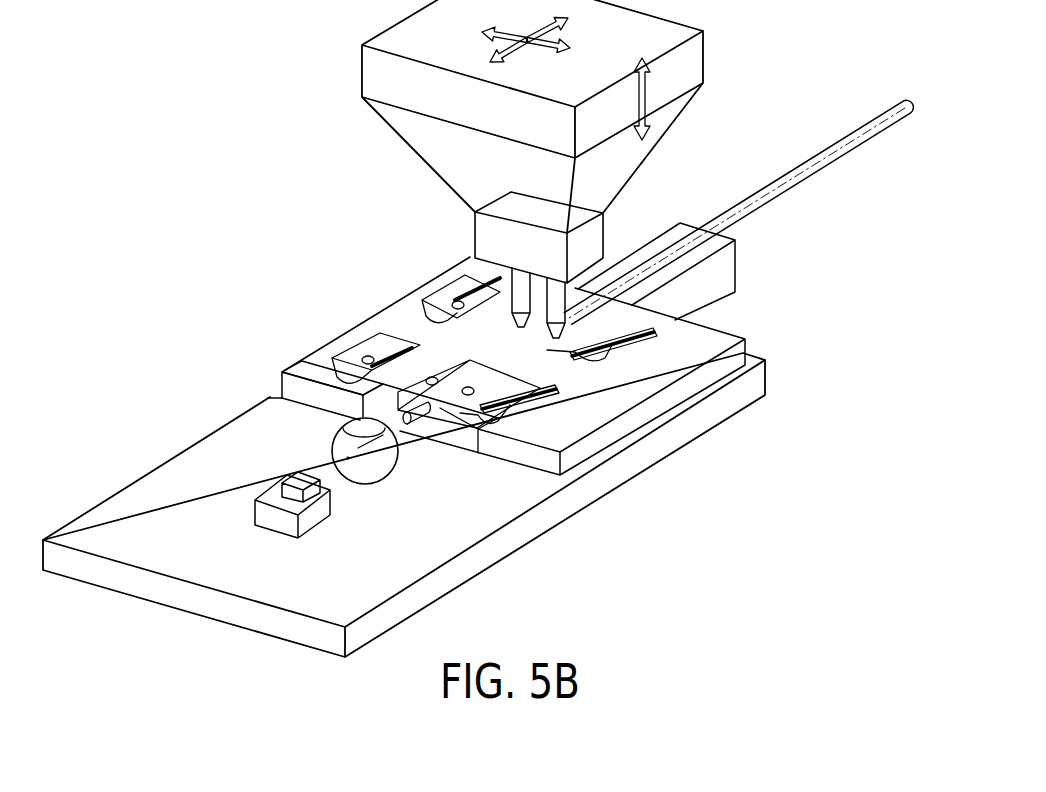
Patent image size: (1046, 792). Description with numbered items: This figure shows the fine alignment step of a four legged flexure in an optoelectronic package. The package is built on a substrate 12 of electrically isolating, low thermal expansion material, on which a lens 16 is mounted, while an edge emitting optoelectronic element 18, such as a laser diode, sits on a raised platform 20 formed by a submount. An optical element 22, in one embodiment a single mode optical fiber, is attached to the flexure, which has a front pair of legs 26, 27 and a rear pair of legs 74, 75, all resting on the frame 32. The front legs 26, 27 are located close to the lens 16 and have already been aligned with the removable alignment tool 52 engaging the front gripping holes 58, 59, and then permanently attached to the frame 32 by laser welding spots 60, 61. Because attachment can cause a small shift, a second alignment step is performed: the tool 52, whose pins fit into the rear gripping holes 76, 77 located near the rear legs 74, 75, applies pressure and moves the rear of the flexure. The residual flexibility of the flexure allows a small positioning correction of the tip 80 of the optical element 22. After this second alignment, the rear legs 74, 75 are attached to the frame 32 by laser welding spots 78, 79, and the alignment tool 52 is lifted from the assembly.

The substrate 12 is at (767, 375).
The lens 16 is at (380, 466).
The edge emitting optoelectronic element 18 is at (300, 477).
The raised platform 20 is at (310, 520).
The optical element 22 is at (760, 190).
The front leg 26 is at (353, 342).
The front leg 27 is at (523, 413).
The frame 32 is at (383, 317).
The alignment tool 52 is at (692, 61).
The gripping hole 58 is at (358, 410).
The gripping hole 59 is at (477, 387).
The laser welding spot 60 is at (268, 398).
The laser welding spot 61 is at (513, 430).
The rear leg 74 is at (433, 290).
The rear leg 75 is at (610, 353).
The rear gripping hole 76 is at (462, 298).
The rear gripping hole 77 is at (600, 345).
The laser welding spot 78 is at (446, 295).
The laser welding spot 79 is at (682, 297).
The tip 80 is at (405, 423).